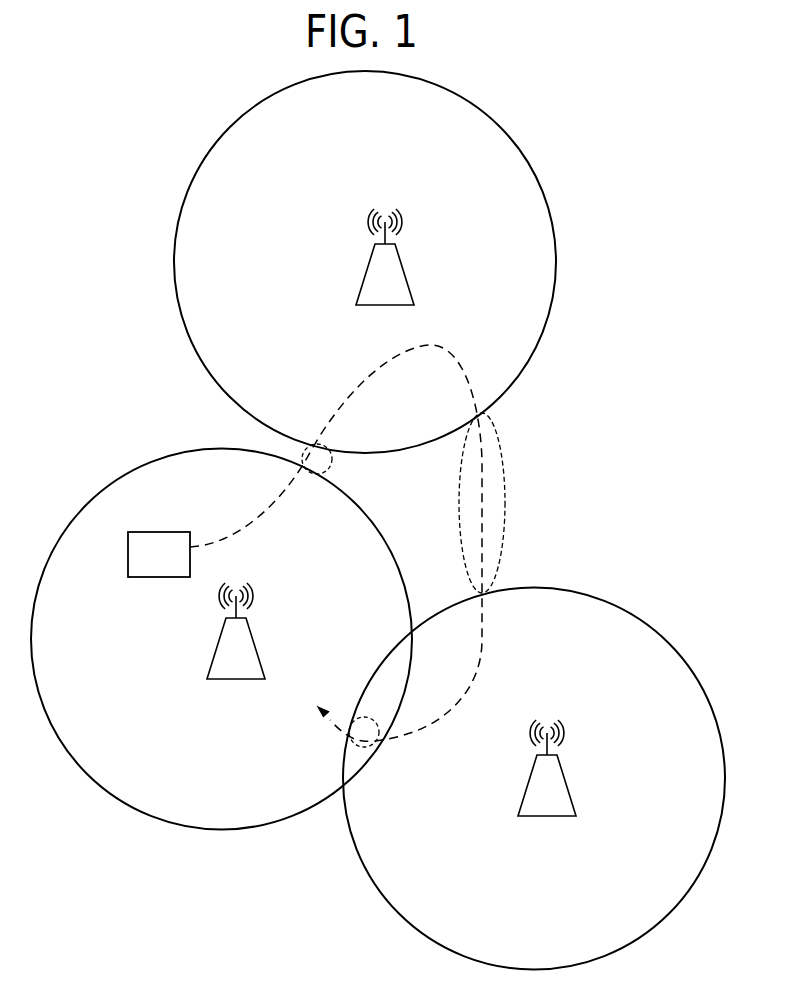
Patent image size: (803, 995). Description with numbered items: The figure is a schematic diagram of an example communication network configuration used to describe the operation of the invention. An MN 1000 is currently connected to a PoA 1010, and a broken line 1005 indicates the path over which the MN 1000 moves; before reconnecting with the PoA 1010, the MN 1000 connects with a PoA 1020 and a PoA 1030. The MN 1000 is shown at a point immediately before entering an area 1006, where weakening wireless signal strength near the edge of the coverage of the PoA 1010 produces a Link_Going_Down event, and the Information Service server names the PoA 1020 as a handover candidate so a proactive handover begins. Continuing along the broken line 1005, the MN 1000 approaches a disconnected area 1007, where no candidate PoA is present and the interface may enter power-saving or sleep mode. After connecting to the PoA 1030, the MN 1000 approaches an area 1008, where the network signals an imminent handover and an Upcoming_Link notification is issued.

The MN 1000 is at (153, 530).
The broken line 1005 is at (455, 360).
The area 1006 is at (329, 472).
The disconnected area 1007 is at (505, 487).
The area 1008 is at (363, 750).
The PoA 1010 is at (232, 682).
The PoA 1020 is at (366, 306).
The PoA 1030 is at (531, 818).